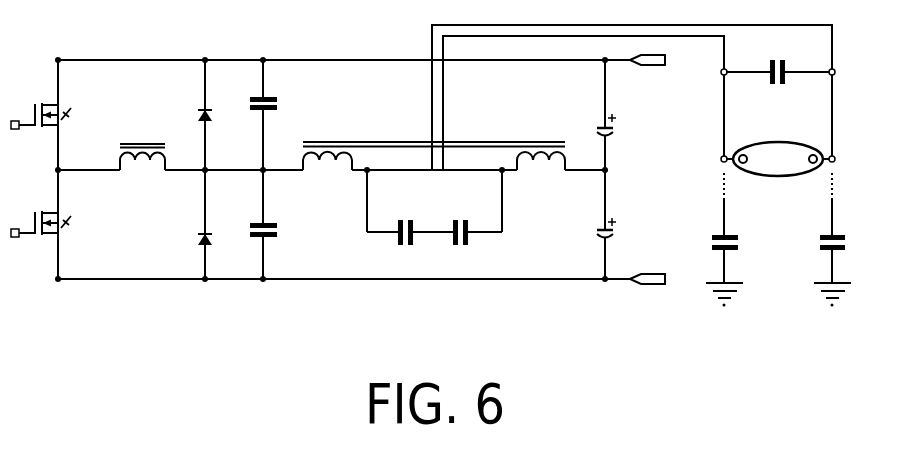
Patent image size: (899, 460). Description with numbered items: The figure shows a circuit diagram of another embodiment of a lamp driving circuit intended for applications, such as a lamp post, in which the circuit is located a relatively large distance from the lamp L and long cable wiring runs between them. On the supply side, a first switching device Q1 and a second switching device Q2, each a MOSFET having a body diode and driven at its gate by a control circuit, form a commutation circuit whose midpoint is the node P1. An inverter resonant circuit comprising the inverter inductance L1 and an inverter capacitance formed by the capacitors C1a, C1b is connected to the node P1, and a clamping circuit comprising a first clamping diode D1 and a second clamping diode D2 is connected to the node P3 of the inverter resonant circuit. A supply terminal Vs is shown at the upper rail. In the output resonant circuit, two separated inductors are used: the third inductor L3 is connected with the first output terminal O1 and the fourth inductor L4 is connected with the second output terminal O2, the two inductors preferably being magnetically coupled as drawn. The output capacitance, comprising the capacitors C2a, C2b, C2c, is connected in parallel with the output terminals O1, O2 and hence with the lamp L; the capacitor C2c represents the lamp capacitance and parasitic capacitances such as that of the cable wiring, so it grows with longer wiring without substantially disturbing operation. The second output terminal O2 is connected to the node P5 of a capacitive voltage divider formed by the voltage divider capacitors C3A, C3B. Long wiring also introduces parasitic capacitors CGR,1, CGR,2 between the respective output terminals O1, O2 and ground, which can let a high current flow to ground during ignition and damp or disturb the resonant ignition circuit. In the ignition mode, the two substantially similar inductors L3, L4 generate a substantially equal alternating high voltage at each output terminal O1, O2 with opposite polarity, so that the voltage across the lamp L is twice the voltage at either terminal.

The first switching device Q1 is at (61, 109).
The second switching device Q2 is at (61, 219).
The node of the commutation circuit P1 is at (71, 183).
The inverter inductance L1 is at (142, 142).
The first clamping diode D1 is at (221, 126).
The second clamping diode D2 is at (221, 250).
The inverter capacitor C1a is at (286, 102).
The inverter capacitor C1b is at (286, 231).
The third inductor L3 is at (434, 141).
The fourth inductor L4 is at (541, 141).
The node of the inverter resonant circuit P3 is at (382, 183).
The node of the capacitive voltage divider P5 is at (589, 183).
The output capacitor C2a is at (411, 249).
The output capacitor C2b is at (467, 249).
The lamp and parasitic capacitance C2c is at (777, 57).
The voltage divider capacitor C3A is at (632, 129).
The voltage divider capacitor C3B is at (579, 233).
The supply voltage terminal Vs is at (663, 62).
The lamp L is at (778, 142).
The first output terminal O1 is at (849, 159).
The second output terminal O2 is at (702, 159).
The parasitic capacitor CGR,1 is at (695, 265).
The parasitic capacitor CGR,2 is at (803, 265).